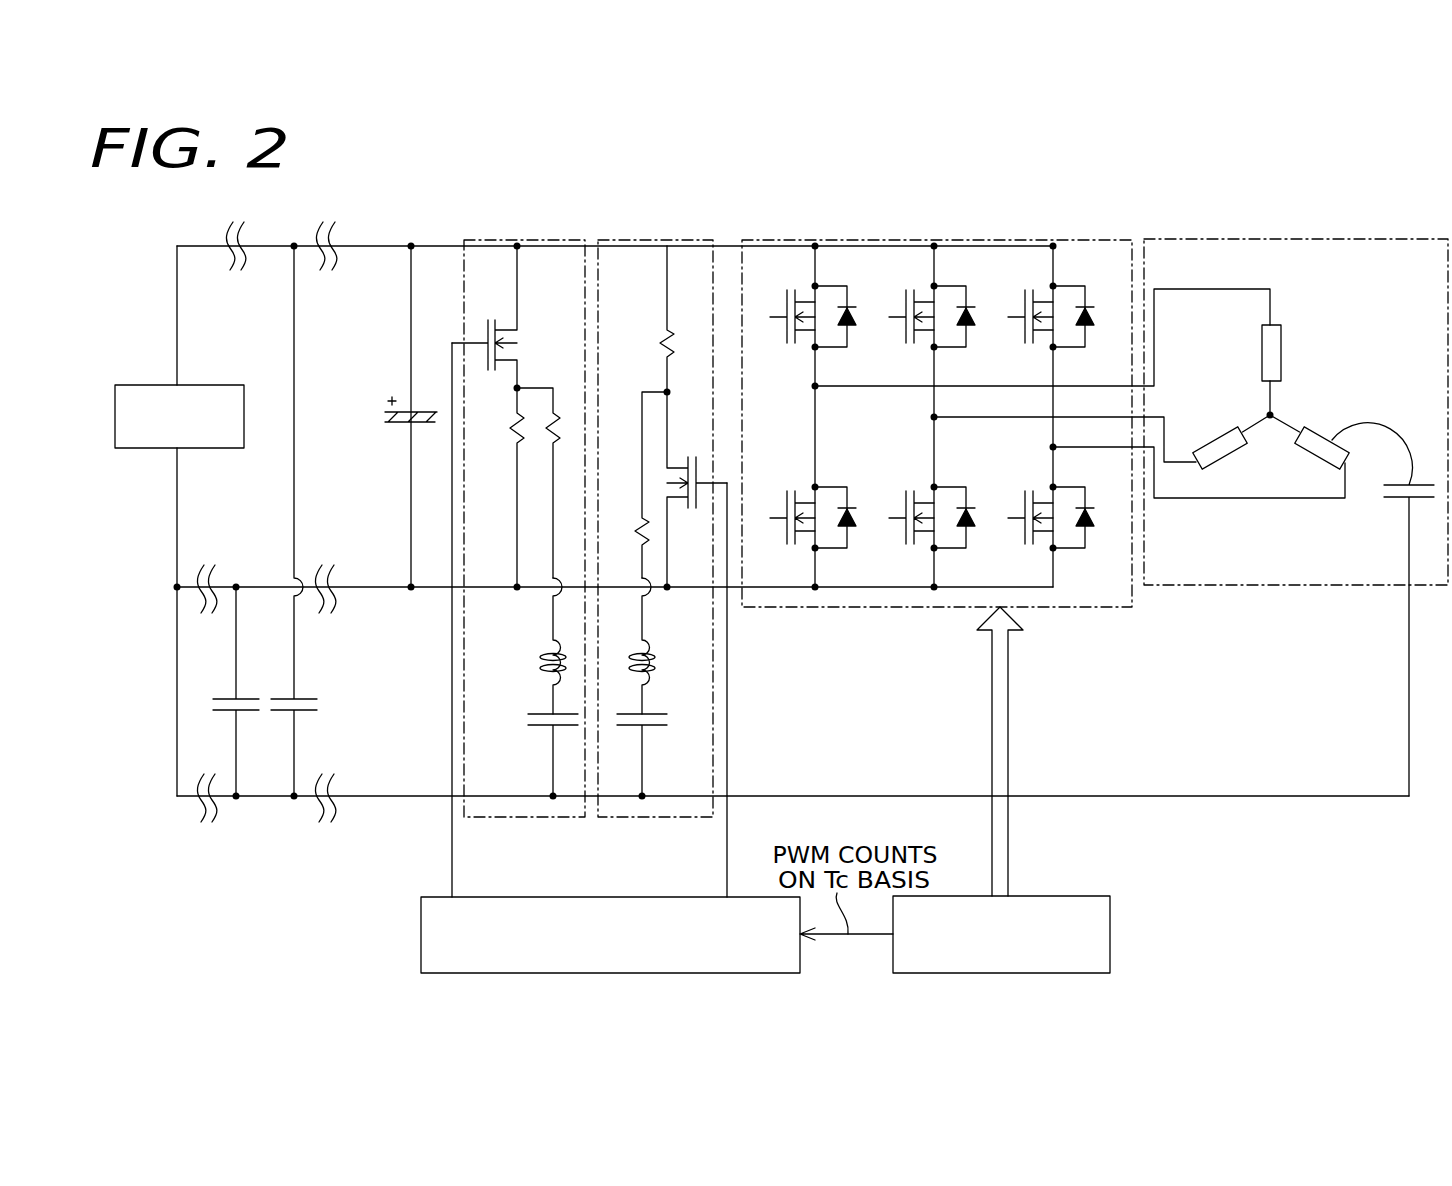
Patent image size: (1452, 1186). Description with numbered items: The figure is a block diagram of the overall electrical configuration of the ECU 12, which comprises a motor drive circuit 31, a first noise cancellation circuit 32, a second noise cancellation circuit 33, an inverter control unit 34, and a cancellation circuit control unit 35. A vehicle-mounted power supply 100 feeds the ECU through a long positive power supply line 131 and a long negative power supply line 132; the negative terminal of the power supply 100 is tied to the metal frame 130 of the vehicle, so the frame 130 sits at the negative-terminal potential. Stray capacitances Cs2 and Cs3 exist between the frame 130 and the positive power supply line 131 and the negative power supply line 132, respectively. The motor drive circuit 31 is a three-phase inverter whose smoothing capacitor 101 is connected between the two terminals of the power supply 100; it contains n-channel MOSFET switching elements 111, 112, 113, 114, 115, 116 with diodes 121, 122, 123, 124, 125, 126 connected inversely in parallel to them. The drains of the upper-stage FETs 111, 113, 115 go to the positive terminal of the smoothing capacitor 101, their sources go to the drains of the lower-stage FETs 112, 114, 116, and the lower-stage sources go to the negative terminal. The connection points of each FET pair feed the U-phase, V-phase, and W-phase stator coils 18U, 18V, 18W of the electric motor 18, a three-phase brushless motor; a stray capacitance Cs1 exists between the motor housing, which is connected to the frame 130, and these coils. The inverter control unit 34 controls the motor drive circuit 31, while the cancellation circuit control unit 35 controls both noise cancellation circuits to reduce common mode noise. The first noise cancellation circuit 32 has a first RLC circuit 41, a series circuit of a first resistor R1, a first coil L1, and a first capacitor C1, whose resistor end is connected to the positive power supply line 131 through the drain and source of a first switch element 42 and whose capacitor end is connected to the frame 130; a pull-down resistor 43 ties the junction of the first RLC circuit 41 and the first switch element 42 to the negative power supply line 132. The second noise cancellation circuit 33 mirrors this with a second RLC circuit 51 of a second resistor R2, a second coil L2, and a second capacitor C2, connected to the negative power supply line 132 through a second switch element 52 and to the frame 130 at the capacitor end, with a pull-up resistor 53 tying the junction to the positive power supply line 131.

The ECU 12 is at (860, 1007).
The electric motor 18 is at (1407, 239).
The U-phase stator coil 18U is at (1282, 355).
The V-phase stator coil 18V is at (1210, 439).
The W-phase stator coil 18W is at (1315, 431).
The motor drive circuit 31 is at (1088, 240).
The first noise cancellation circuit 32 is at (548, 240).
The second noise cancellation circuit 33 is at (670, 240).
The inverter control unit 34 is at (1070, 896).
The cancellation circuit control unit 35 is at (641, 897).
The first RLC circuit 41 is at (531, 687).
The first switch element 42 is at (488, 324).
The pull-down resistor 43 is at (515, 428).
The second RLC circuit 51 is at (662, 687).
The second switch element 52 is at (693, 462).
The pull-up resistor 53 is at (661, 342).
The power supply 100 is at (217, 385).
The smoothing capacitor 101 is at (396, 424).
The U-phase upper-stage FET 111 is at (786, 300).
The U-phase lower-stage FET 112 is at (786, 501).
The V-phase upper-stage FET 113 is at (905, 300).
The V-phase lower-stage FET 114 is at (905, 501).
The W-phase upper-stage FET 115 is at (1024, 300).
The W-phase lower-stage FET 116 is at (1024, 501).
The diode 121 is at (853, 327).
The diode 122 is at (853, 528).
The diode 123 is at (972, 327).
The diode 124 is at (972, 528).
The diode 125 is at (1091, 327).
The diode 126 is at (1091, 528).
The frame 130 is at (827, 796).
The positive power supply line 131 is at (382, 246).
The negative power supply line 132 is at (384, 587).
The first capacitor C1 is at (543, 755).
The second capacitor C2 is at (651, 755).
The first coil L1 is at (541, 656).
The second coil L2 is at (659, 660).
The first resistor R1 is at (553, 418).
The second resistor R2 is at (634, 527).
The stray capacitance Cs1 is at (1397, 502).
The stray capacitance Cs2 is at (283, 697).
The stray capacitance Cs3 is at (228, 697).